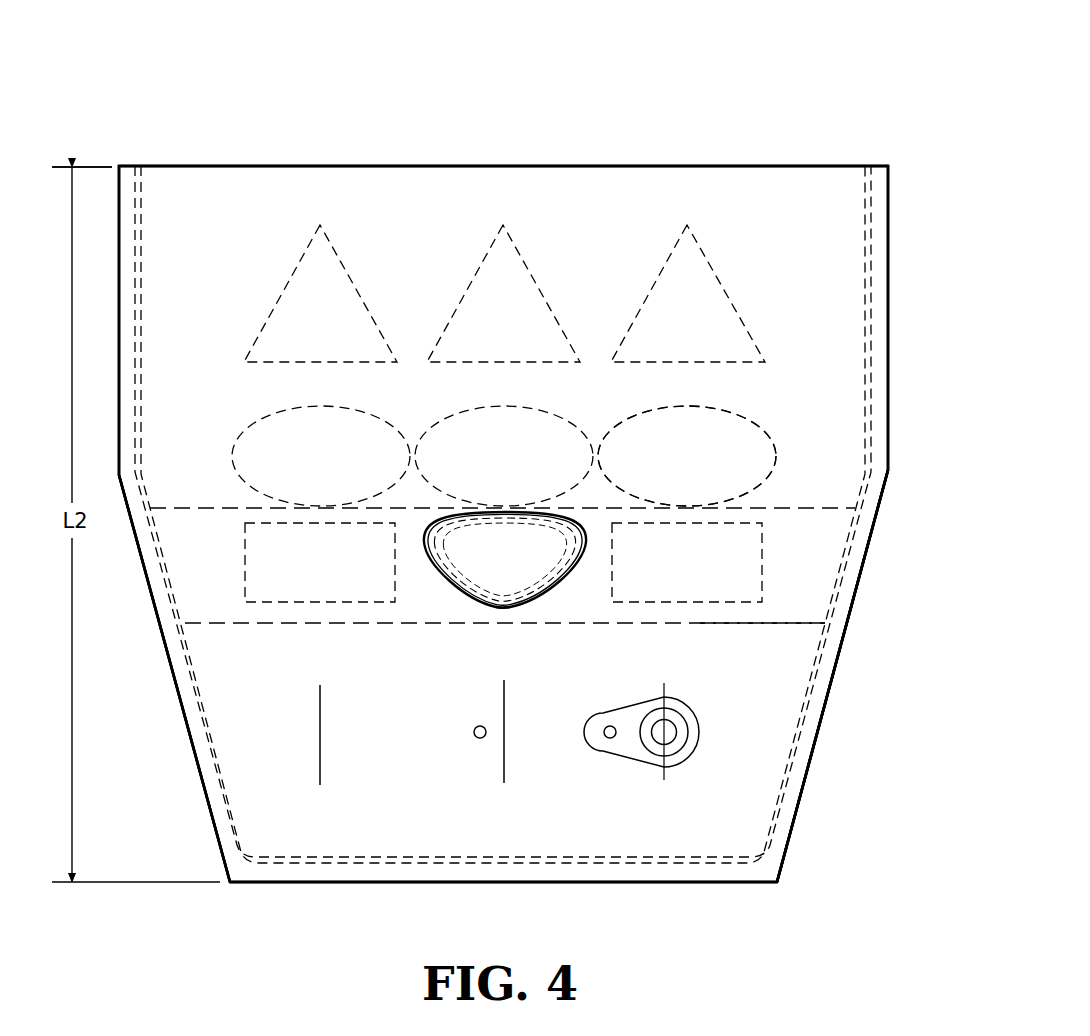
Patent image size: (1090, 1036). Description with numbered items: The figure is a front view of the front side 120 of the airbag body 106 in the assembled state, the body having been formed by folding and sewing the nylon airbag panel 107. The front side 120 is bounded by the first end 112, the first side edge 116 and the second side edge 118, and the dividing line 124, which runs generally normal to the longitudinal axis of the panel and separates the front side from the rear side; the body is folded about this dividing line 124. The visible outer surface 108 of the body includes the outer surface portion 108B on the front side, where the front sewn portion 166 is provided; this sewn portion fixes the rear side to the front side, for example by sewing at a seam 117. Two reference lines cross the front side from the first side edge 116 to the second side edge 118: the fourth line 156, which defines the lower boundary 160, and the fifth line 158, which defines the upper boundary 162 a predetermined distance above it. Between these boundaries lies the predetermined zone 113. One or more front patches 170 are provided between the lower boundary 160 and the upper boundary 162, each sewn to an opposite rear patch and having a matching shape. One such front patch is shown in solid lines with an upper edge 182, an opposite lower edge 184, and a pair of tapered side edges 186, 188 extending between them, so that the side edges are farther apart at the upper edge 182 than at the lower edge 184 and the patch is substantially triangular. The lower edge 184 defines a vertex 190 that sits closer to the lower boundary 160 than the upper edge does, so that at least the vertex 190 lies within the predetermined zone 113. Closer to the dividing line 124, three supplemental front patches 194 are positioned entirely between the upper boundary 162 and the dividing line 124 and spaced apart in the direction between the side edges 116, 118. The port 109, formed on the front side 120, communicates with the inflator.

The airbag body 106 is at (730, 77).
The airbag panel 107 is at (352, 99).
The outer surface 108 is at (855, 205).
The outer surface portion 108B is at (851, 273).
The port 109 is at (668, 760).
The first end 112 is at (665, 884).
The predetermined zone 113 is at (805, 585).
The first side edge 116 is at (812, 757).
The seam 117 is at (478, 522).
The second side edge 118 is at (203, 785).
The front side 120 is at (86, 158).
The dividing line 124 is at (580, 166).
The fourth line 156 is at (725, 628).
The fifth line 158 is at (795, 503).
The lower boundary 160 is at (575, 628).
The upper boundary 162 is at (612, 500).
The front sewn portion 166 is at (580, 578).
The front patches 170 is at (372, 410).
The upper edge 182 is at (563, 512).
The lower edge 184 is at (527, 505).
The tapered side edge 186 is at (425, 548).
The tapered side edge 188 is at (585, 548).
The vertex 190 is at (500, 606).
The supplemental front patches 194 is at (272, 303).